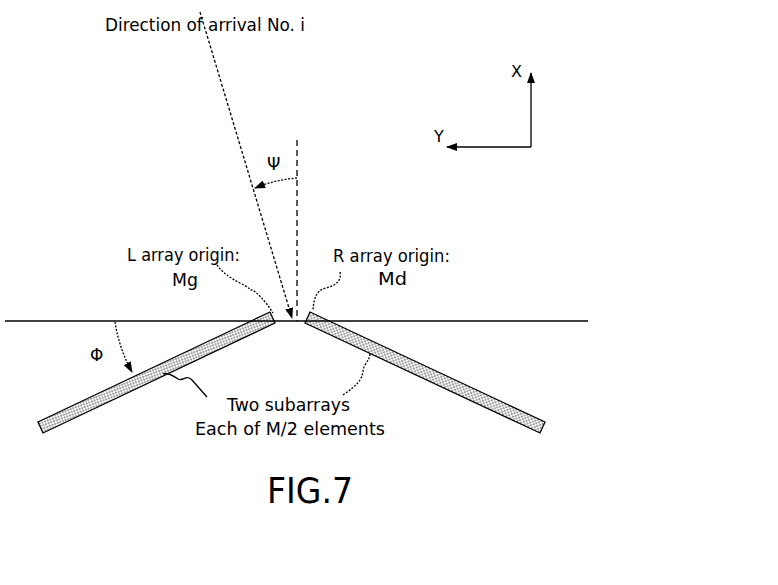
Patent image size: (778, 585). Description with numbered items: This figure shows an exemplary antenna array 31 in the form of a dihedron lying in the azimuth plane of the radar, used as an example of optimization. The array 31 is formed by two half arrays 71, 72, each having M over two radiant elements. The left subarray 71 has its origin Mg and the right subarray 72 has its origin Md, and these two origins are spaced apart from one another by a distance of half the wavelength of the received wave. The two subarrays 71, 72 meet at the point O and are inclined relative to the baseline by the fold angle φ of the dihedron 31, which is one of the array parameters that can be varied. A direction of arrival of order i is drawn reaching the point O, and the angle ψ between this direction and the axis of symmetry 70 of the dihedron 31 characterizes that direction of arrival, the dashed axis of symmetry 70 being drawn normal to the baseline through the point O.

The axis of symmetry 70 is at (298, 153).
The left half array 71 is at (60, 425).
The right half array 72 is at (440, 373).
The dihedron array 31 is at (317, 386).